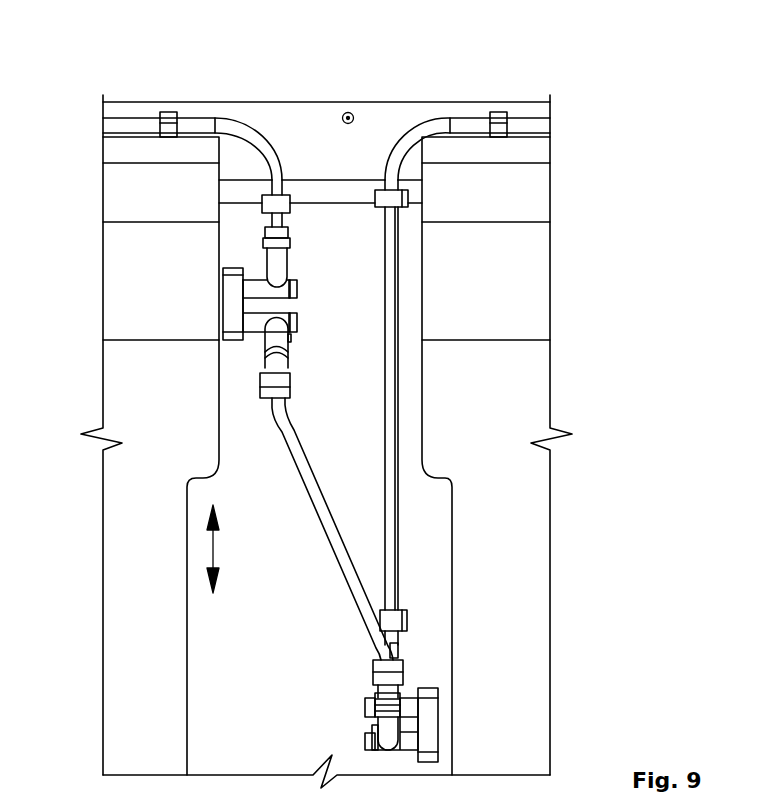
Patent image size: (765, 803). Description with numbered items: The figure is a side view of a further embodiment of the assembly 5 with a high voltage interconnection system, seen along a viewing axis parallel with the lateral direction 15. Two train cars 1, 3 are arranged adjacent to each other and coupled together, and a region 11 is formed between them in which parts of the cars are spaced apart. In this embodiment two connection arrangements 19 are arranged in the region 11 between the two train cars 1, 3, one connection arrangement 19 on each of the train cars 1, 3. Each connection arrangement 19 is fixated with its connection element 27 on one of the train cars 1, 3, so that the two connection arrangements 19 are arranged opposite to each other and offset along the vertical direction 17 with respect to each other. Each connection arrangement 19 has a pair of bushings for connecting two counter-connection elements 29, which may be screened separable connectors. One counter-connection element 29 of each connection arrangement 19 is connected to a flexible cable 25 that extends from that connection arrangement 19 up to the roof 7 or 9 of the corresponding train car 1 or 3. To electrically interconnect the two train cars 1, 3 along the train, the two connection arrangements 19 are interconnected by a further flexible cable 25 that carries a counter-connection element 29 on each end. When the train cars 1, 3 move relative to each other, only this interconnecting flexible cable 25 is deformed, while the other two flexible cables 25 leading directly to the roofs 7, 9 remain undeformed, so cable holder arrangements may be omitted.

The train car 1 is at (201, 95).
The train car 3 is at (498, 95).
The assembly 5 is at (552, 53).
The roof 7 is at (123, 140).
The roof 9 is at (532, 139).
The region 11 is at (268, 640).
The lateral direction 15 is at (350, 111).
The vertical direction 17 is at (216, 548).
The connection arrangement 19 is at (253, 343).
The flexible cable 25 is at (262, 137).
The connection element 27 is at (232, 300).
The counter-connection element 29 is at (277, 263).